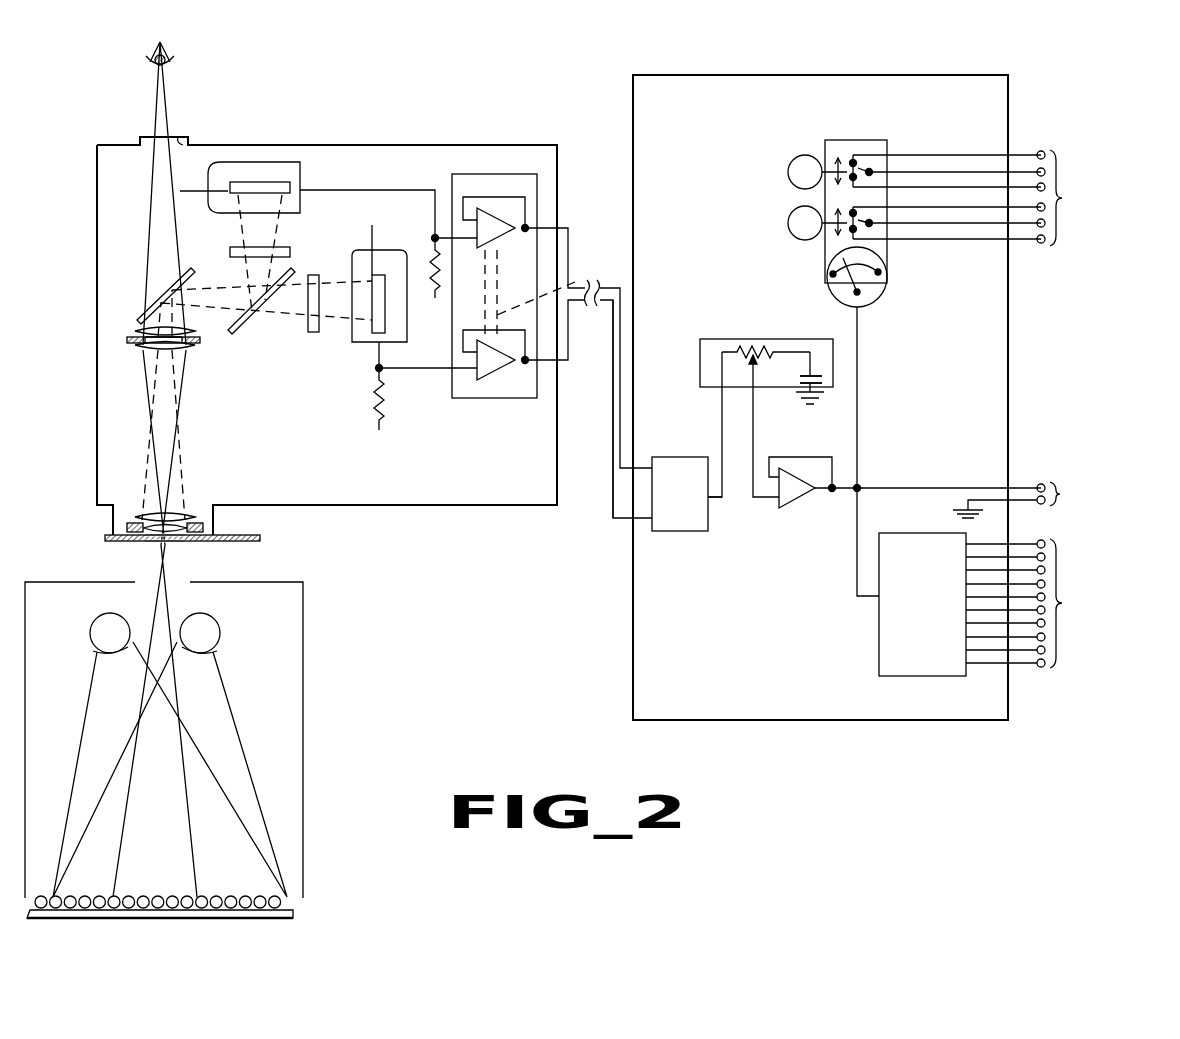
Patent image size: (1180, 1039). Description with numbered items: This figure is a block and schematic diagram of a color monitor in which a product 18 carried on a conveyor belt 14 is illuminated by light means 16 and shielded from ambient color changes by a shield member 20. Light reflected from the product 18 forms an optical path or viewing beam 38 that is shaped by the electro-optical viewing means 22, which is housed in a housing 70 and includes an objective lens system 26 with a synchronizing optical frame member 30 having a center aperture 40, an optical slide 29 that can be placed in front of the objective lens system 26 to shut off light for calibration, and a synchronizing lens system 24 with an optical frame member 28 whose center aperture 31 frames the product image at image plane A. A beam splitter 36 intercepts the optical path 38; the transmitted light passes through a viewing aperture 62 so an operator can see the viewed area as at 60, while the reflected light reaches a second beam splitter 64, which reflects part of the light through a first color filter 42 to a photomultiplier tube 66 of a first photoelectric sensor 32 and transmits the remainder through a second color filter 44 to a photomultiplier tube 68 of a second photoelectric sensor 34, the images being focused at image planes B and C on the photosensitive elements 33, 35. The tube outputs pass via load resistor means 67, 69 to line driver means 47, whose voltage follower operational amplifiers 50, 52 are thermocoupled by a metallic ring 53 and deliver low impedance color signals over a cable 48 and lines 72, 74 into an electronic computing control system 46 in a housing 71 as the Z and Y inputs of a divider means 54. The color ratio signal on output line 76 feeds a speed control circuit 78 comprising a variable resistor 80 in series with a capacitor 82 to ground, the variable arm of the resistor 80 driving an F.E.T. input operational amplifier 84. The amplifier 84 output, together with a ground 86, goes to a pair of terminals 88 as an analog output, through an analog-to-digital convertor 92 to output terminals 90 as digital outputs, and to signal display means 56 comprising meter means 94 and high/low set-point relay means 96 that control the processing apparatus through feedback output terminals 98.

The conveyor belt 14 is at (293, 914).
The light means 16 is at (90, 633).
The product 18 is at (177, 900).
The shield member 20 is at (303, 657).
The electro-optical viewing means 22 is at (338, 508).
The synchronizing lens system 24 is at (150, 357).
The objective lens system 26 is at (135, 515).
The optical frame member 28 is at (133, 343).
The optical slide 29 is at (255, 535).
The synchronizing optical frame member 30 is at (112, 537).
The center aperture 31 is at (183, 331).
The first photoelectric sensor 32 is at (302, 170).
The photosensitive element 33 is at (265, 182).
The second photoelectric sensor 34 is at (395, 250).
The photosensitive element 35 is at (378, 343).
The beam splitter 36 is at (145, 318).
The optical path 38 is at (166, 563).
The center aperture 40 is at (170, 523).
The first color filter 42 is at (290, 250).
The second color filter 44 is at (312, 332).
The electronic computing control system 46 is at (631, 628).
The line driver means 47 is at (476, 400).
The cable 48 is at (611, 360).
The operational amplifier 50 is at (500, 245).
The operational amplifier 52 is at (500, 374).
The metallic ring 53 is at (570, 285).
The divider means 54 is at (684, 533).
The signal display means 56 is at (828, 283).
The operator view 60 is at (178, 62).
The viewing aperture 62 is at (182, 135).
The second beam splitter 64 is at (242, 320).
The photomultiplier tube 66 is at (300, 204).
The load resistor means 67 is at (435, 300).
The photomultiplier tube 68 is at (400, 342).
The load resistor means 69 is at (375, 402).
The housing 70 is at (437, 505).
The housing 71 is at (800, 720).
The line 72 is at (620, 430).
The line 74 is at (613, 455).
The output line 76 is at (712, 503).
The speed control circuit 78 is at (765, 337).
The variable resistor 80 is at (748, 350).
The capacitor 82 is at (805, 388).
The operational amplifier 84 is at (797, 506).
The ground 86 is at (955, 510).
The terminals 88 is at (1038, 485).
The output terminals 90 is at (1045, 650).
The analog-to-digital convertor 92 is at (877, 651).
The meter means 94 is at (825, 259).
The high/low set-point relay means 96 is at (825, 203).
The feedback output terminals 98 is at (1038, 242).
The image plane A is at (127, 340).
The image plane B is at (204, 179).
The image plane C is at (363, 248).